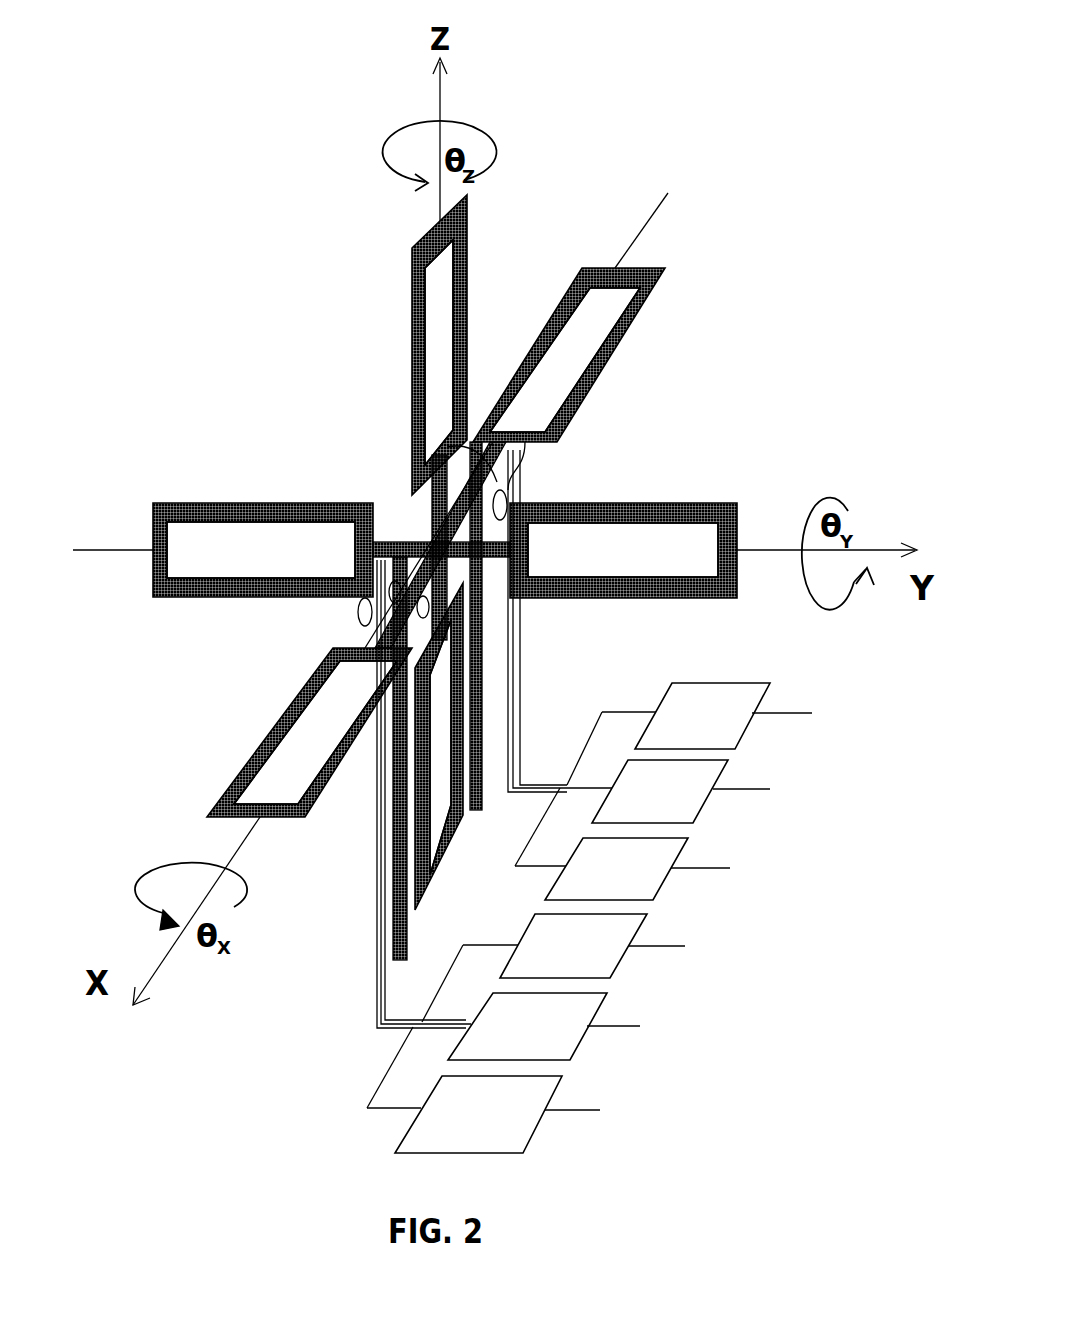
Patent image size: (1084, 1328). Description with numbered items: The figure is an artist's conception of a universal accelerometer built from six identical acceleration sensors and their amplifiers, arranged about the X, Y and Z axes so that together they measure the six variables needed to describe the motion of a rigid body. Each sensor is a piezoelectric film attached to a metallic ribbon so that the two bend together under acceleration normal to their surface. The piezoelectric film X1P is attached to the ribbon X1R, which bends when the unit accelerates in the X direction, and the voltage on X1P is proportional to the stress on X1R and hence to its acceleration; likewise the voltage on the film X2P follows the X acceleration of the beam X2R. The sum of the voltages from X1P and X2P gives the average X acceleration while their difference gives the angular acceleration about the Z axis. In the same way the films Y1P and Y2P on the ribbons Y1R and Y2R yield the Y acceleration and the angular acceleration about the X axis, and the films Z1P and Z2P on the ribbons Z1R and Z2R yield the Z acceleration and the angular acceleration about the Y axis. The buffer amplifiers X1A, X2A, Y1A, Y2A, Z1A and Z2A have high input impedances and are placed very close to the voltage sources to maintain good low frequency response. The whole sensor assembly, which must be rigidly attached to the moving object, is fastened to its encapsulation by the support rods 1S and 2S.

The ribbon X1R is at (263, 538).
The piezoelectric film X1P is at (261, 550).
The beam X2R is at (623, 539).
The piezoelectric film X2P is at (623, 550).
The ribbon Y1R is at (443, 746).
The piezoelectric film Y1P is at (440, 747).
The ribbon Y2R is at (422, 345).
The piezoelectric film Y2P is at (445, 352).
The ribbon Z1R is at (569, 355).
The piezoelectric film Z1P is at (565, 360).
The ribbon Z2R is at (309, 732).
The piezoelectric film Z2P is at (315, 732).
The support rod 1S is at (414, 768).
The support rod 2S is at (490, 639).
The buffer amplifier X1A is at (544, 1026).
The buffer amplifier X2A is at (637, 869).
The buffer amplifier Y1A is at (592, 946).
The buffer amplifier Y2A is at (681, 791).
The buffer amplifier Z1A is at (723, 716).
The buffer amplifier Z2A is at (497, 1114).